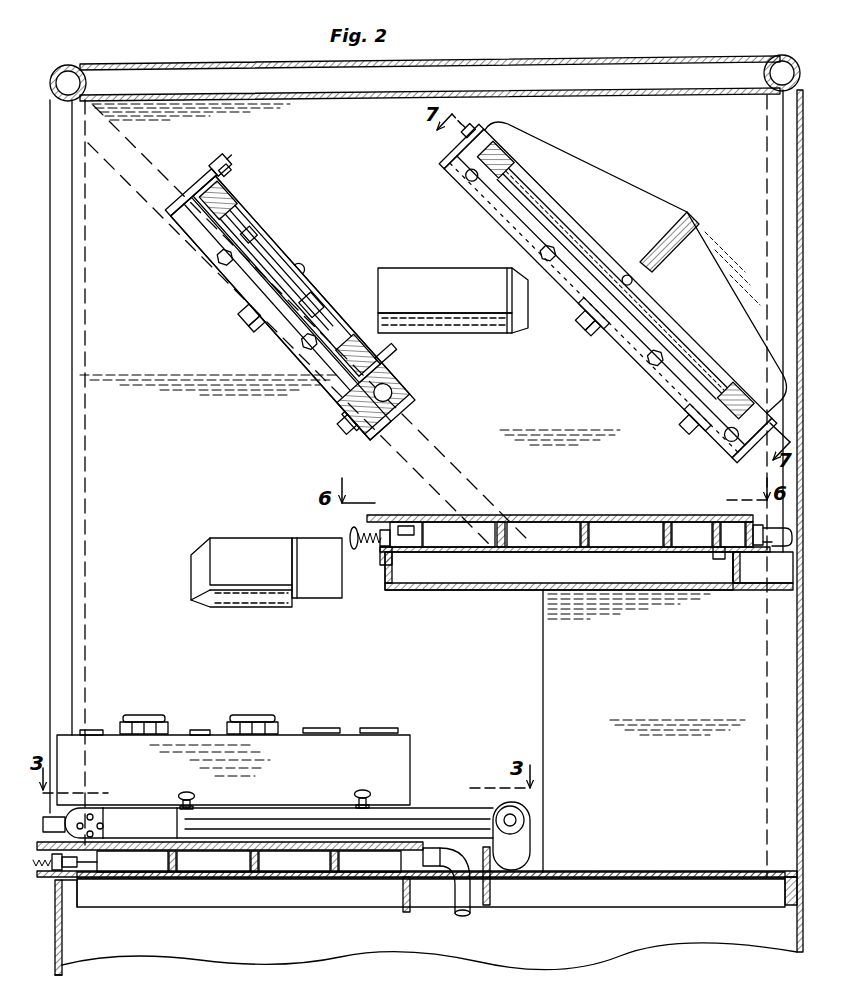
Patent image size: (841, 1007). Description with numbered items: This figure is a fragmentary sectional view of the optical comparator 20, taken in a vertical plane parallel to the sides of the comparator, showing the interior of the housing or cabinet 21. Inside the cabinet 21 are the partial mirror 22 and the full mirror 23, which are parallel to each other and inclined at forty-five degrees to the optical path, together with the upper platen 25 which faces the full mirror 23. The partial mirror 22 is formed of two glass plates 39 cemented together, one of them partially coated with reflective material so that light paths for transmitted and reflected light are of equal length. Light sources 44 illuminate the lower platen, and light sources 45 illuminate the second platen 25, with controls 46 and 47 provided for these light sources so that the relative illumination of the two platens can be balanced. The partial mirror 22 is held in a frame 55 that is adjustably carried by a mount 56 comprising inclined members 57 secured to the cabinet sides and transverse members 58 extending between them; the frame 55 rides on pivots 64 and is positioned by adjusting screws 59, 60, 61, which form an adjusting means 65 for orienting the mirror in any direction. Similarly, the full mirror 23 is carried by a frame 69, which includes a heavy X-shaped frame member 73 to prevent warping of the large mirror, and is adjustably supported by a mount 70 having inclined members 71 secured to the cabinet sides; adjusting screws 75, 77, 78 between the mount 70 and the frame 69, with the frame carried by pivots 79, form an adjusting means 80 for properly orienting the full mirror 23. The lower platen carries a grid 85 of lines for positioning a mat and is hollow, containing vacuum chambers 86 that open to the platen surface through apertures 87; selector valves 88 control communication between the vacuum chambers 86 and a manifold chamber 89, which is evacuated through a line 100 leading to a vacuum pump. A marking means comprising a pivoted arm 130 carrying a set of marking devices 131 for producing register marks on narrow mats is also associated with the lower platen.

The optical comparator 20 is at (185, 62).
The housing or cabinet 21 is at (246, 50).
The partial mirror 22 is at (243, 262).
The full mirror 23 is at (522, 209).
The second or upper platen 25 is at (554, 520).
The glass plates 39 is at (251, 252).
The light sources 44 is at (222, 538).
The light sources 45 is at (437, 268).
The control 46 is at (143, 714).
The control 47 is at (261, 714).
The frame 55 is at (225, 210).
The mount 56 is at (318, 378).
The inclined members 57 is at (402, 388).
The transverse members 58 is at (205, 178).
The adjusting screw 59 is at (196, 186).
The adjusting screw 60 is at (247, 318).
The adjusting screw 61 is at (352, 422).
The pivots 64 is at (293, 270).
The adjusting means 65 is at (255, 333).
The frame 69 is at (728, 438).
The mount 70 is at (665, 396).
The inclined members 71 is at (512, 243).
The X-shaped frame member 73 is at (590, 157).
The adjusting screw 75 is at (470, 130).
The adjusting screw 77 is at (587, 320).
The adjusting screw 78 is at (690, 428).
The pivots 79 is at (628, 278).
The adjusting means 80 is at (592, 332).
The grid 85 is at (125, 840).
The vacuum chambers 86 is at (503, 518).
The apertures 87 is at (468, 518).
The selector valves 88 is at (355, 533).
The manifold chamber 89 is at (398, 518).
The line 100 is at (462, 928).
The pivoted arm 130 is at (272, 802).
The marking devices 131 is at (186, 791).